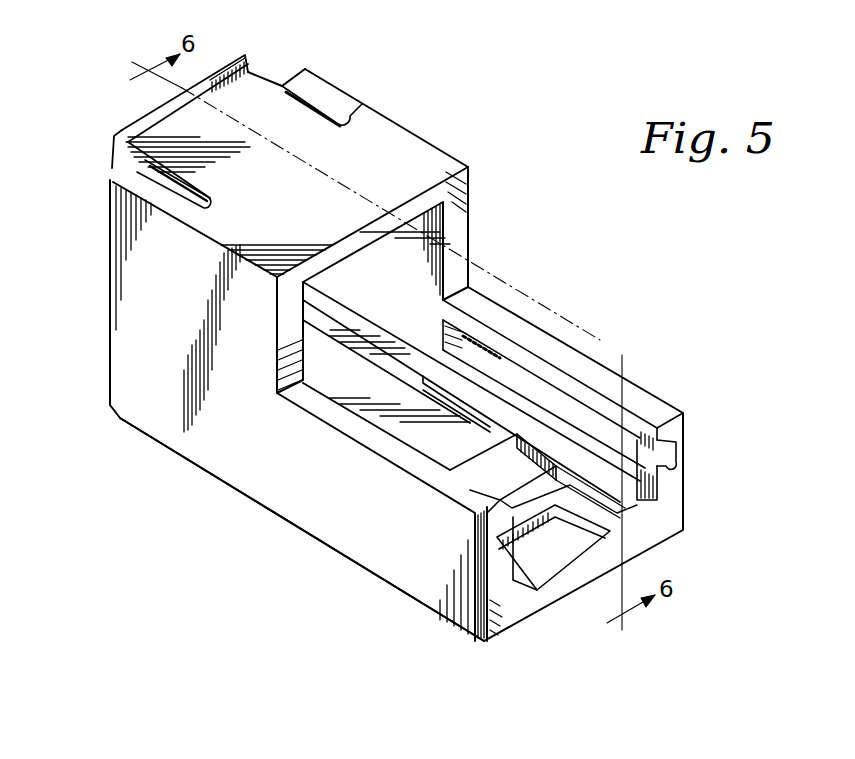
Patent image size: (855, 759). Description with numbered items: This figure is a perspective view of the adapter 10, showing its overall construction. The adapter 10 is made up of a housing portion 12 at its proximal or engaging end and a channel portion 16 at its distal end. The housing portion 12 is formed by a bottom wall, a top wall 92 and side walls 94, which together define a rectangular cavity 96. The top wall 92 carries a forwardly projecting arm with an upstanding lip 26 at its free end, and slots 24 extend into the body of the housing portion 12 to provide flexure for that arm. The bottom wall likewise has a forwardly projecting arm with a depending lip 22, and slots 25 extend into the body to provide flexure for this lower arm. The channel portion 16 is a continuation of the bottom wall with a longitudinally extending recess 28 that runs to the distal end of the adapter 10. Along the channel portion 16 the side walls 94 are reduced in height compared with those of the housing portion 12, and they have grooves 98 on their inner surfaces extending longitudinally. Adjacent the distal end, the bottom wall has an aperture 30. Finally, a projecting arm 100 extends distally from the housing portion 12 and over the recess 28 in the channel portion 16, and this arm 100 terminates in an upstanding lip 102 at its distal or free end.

The adapter 10 is at (480, 200).
The housing portion 12 is at (153, 360).
The channel portion 16 is at (380, 513).
The depending lip 22 is at (260, 97).
The slots 24 is at (330, 118).
The slots 25 is at (345, 318).
The upstanding lip 26 is at (213, 68).
The recess 28 is at (630, 538).
The aperture 30 is at (558, 550).
The top wall 92 is at (397, 168).
The side walls 94 is at (205, 310).
The rectangular cavity 96 is at (403, 255).
The grooves 98 is at (690, 468).
The projecting arm 100 is at (463, 457).
The upstanding lip 102 is at (503, 483).